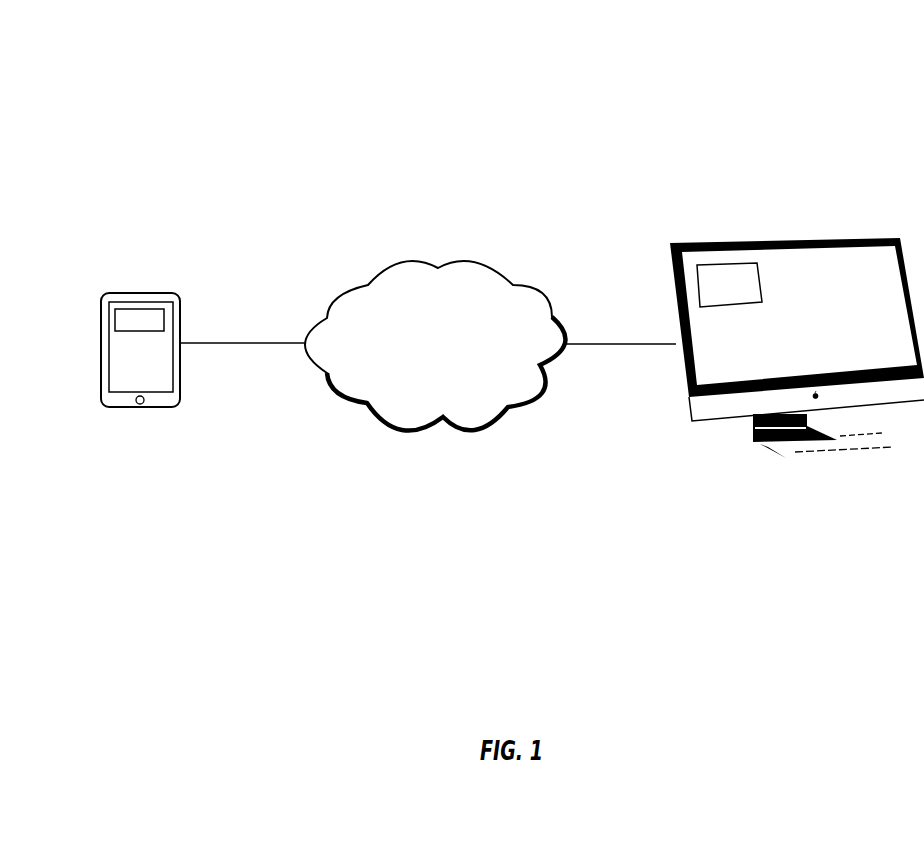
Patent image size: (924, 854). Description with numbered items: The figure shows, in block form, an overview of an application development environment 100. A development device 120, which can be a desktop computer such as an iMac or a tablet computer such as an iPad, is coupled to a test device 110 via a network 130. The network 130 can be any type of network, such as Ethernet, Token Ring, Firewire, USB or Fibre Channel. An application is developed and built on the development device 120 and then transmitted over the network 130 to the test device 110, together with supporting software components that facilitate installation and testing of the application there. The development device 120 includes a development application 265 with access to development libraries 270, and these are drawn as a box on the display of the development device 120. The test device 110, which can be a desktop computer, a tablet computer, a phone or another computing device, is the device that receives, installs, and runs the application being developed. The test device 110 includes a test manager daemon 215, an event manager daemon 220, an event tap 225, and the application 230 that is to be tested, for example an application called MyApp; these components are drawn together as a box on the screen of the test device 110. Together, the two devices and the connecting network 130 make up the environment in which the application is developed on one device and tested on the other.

The application development environment 100 is at (435, 38).
The test device 110 is at (153, 357).
The development device 120 is at (812, 319).
The network 130 is at (488, 356).
The test manager daemon 215 is at (205, 293).
The event manager daemon 220 is at (205, 293).
The event tap 225 is at (205, 293).
The application 230 is at (138, 315).
The development application 265 is at (761, 256).
The development libraries 270 is at (727, 268).